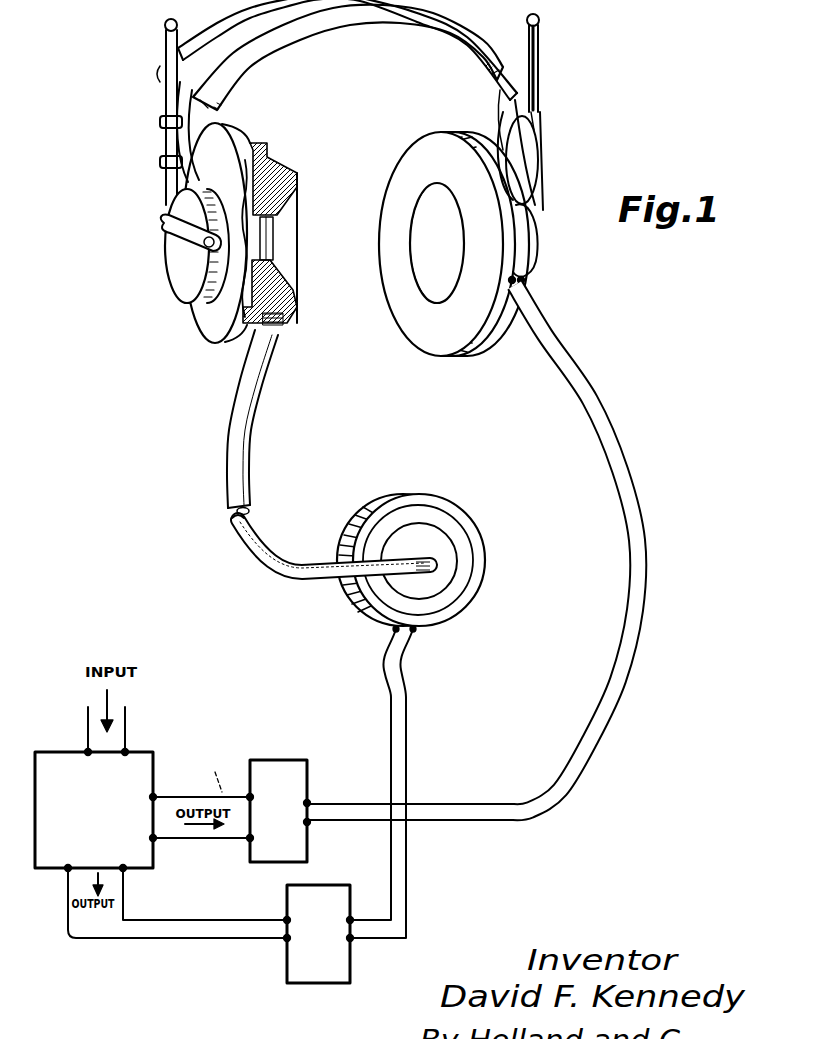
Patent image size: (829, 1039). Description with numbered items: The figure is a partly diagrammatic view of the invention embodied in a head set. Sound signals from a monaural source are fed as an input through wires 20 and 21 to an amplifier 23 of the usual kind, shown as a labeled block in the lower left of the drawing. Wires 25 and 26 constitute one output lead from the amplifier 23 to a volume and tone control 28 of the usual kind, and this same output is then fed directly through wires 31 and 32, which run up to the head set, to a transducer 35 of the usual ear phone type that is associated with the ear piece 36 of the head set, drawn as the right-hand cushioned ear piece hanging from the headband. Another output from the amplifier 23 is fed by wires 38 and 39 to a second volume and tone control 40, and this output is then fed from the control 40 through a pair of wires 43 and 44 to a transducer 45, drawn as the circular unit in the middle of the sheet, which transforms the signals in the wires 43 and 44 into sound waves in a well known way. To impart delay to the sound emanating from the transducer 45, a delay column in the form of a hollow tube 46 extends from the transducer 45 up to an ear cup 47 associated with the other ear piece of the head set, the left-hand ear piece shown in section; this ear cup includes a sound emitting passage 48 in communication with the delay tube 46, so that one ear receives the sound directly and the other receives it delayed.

The wire 20 is at (86, 719).
The wire 21 is at (127, 725).
The amplifier 23 is at (47, 858).
The wire 25 is at (181, 797).
The wire 26 is at (180, 840).
The volume and tone control 28 is at (270, 757).
The wire 31 is at (472, 574).
The wire 32 is at (540, 823).
The transducer 35 is at (514, 278).
The ear piece 36 is at (493, 335).
The wire 38 is at (105, 940).
The wire 39 is at (172, 918).
The volume and tone control 40 is at (307, 987).
The wire 43 is at (410, 893).
The wire 44 is at (415, 782).
The transducer 45 is at (475, 590).
The hollow tube 46 is at (257, 557).
The ear cup 47 is at (290, 325).
The sound emitting passage 48 is at (270, 272).